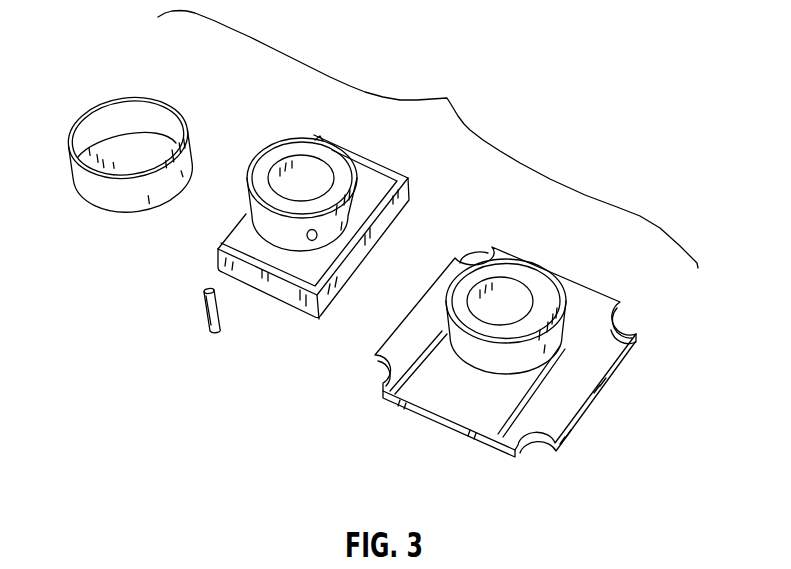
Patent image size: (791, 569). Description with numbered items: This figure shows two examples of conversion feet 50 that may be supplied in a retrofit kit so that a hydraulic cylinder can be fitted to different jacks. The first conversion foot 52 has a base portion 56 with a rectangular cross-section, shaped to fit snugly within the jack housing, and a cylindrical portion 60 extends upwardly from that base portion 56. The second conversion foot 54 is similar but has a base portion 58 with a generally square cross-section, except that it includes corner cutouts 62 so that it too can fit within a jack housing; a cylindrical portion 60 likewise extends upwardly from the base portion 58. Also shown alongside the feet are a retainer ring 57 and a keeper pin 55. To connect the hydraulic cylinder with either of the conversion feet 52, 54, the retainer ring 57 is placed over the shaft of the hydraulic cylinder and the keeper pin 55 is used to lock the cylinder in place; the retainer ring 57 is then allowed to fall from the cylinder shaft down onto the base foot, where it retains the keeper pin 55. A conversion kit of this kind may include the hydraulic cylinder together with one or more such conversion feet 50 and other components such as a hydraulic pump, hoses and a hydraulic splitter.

The conversion feet 50 is at (428, 140).
The first conversion foot 52 is at (318, 139).
The second conversion foot 54 is at (578, 278).
The keeper pin 55 is at (200, 302).
The base portion 56 is at (375, 178).
The retainer ring 57 is at (73, 170).
The base portion 58 is at (600, 383).
The cylindrical portion 60 is at (263, 177).
The corner cutouts 62 is at (467, 255).